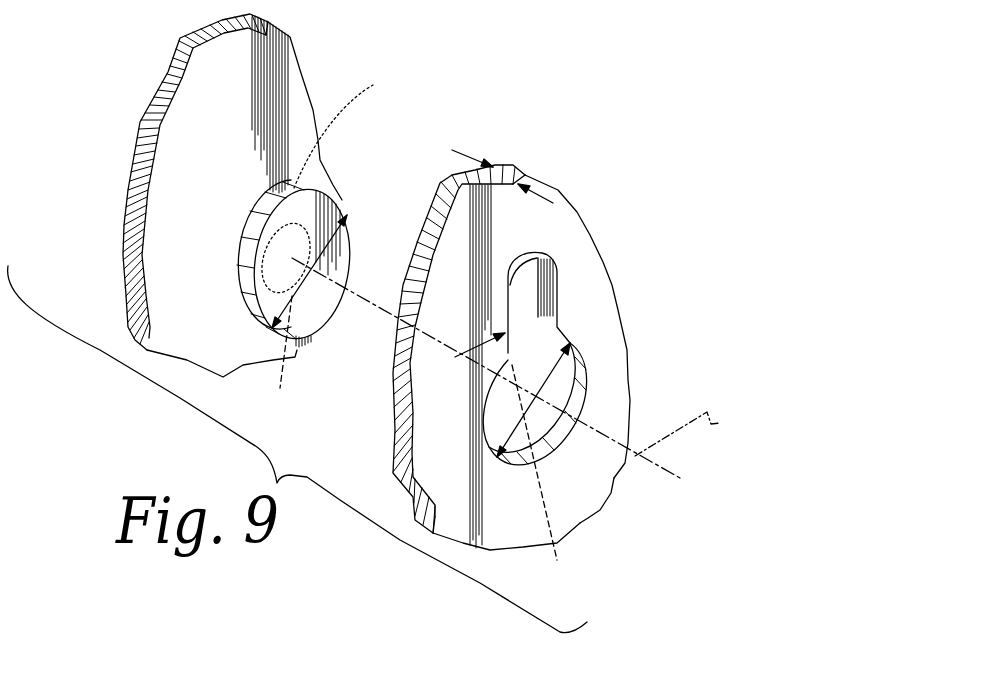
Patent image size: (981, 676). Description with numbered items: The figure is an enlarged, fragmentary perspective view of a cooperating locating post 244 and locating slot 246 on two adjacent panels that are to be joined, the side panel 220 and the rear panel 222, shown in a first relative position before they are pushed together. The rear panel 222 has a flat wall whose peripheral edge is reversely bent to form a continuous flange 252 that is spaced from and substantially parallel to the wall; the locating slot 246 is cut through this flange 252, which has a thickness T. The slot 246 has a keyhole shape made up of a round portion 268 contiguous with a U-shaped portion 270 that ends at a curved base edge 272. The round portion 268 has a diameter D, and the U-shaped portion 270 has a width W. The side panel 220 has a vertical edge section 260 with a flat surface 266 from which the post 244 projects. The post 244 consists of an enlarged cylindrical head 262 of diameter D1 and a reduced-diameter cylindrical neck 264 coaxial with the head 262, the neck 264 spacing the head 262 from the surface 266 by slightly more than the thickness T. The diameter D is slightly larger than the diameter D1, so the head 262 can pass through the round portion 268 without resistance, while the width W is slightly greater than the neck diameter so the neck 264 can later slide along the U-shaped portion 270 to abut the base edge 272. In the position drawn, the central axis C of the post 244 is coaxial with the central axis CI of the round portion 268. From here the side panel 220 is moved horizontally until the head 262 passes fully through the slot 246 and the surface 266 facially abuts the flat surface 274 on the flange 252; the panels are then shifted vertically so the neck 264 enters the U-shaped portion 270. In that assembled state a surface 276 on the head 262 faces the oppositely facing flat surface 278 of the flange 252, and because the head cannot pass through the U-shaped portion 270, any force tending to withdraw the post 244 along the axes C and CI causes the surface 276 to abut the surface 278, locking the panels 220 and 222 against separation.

The side panel 220 is at (297, 77).
The rear panel 222 is at (618, 313).
The locating post 244 is at (348, 270).
The locating slot 246 is at (522, 310).
The flange 252 is at (508, 532).
The vertical edge section 260 is at (180, 128).
The enlarged head 262 is at (311, 192).
The neck 264 is at (373, 86).
The flat surface 266 is at (187, 178).
The round portion 268 is at (578, 381).
The U-shaped portion 270 is at (560, 298).
The curved base edge 272 is at (510, 312).
The flat surface 274 is at (395, 400).
The surface 276 is at (240, 272).
The flat surface 278 is at (583, 500).
The thickness T is at (529, 186).
The width W is at (420, 341).
The diameter D is at (557, 560).
The diameter D1 is at (280, 388).
The central axis C is at (386, 308).
The central axis CI is at (693, 428).